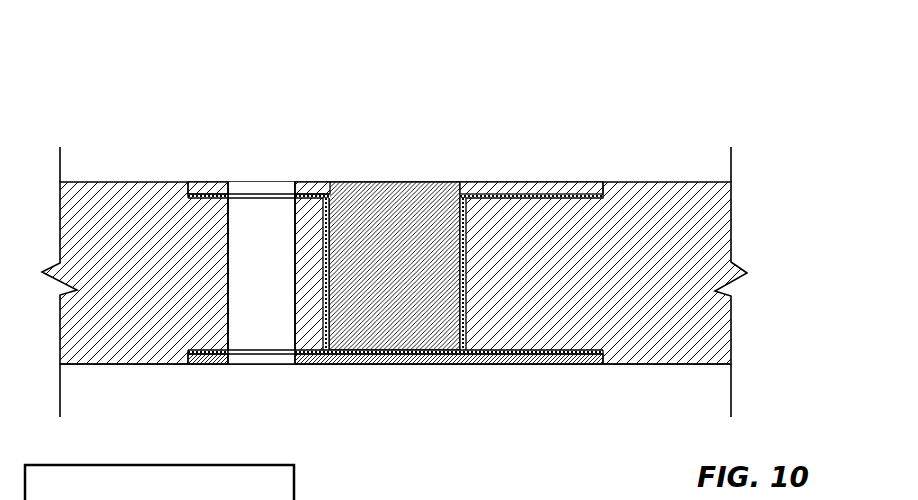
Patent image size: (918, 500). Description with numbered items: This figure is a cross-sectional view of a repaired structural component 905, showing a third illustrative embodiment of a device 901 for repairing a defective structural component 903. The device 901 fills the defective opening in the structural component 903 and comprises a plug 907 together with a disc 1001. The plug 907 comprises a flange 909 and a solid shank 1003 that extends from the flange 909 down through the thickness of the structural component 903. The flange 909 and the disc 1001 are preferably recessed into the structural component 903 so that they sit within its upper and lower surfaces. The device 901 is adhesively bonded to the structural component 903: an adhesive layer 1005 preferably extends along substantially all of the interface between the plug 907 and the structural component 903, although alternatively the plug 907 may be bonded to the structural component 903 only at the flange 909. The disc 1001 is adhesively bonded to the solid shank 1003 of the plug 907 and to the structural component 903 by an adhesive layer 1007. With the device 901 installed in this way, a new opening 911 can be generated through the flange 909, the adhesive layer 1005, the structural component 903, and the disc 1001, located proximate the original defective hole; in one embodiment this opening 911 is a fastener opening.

The device 901 is at (524, 152).
The structural component 903 is at (628, 364).
The repaired structural component 905 is at (724, 86).
The plug 907 is at (409, 175).
The flange 909 is at (573, 181).
The new opening 911 is at (257, 187).
The disc 1001 is at (360, 365).
The solid shank 1003 is at (447, 266).
The adhesive layer 1005 is at (188, 187).
The adhesive layer 1007 is at (490, 347).